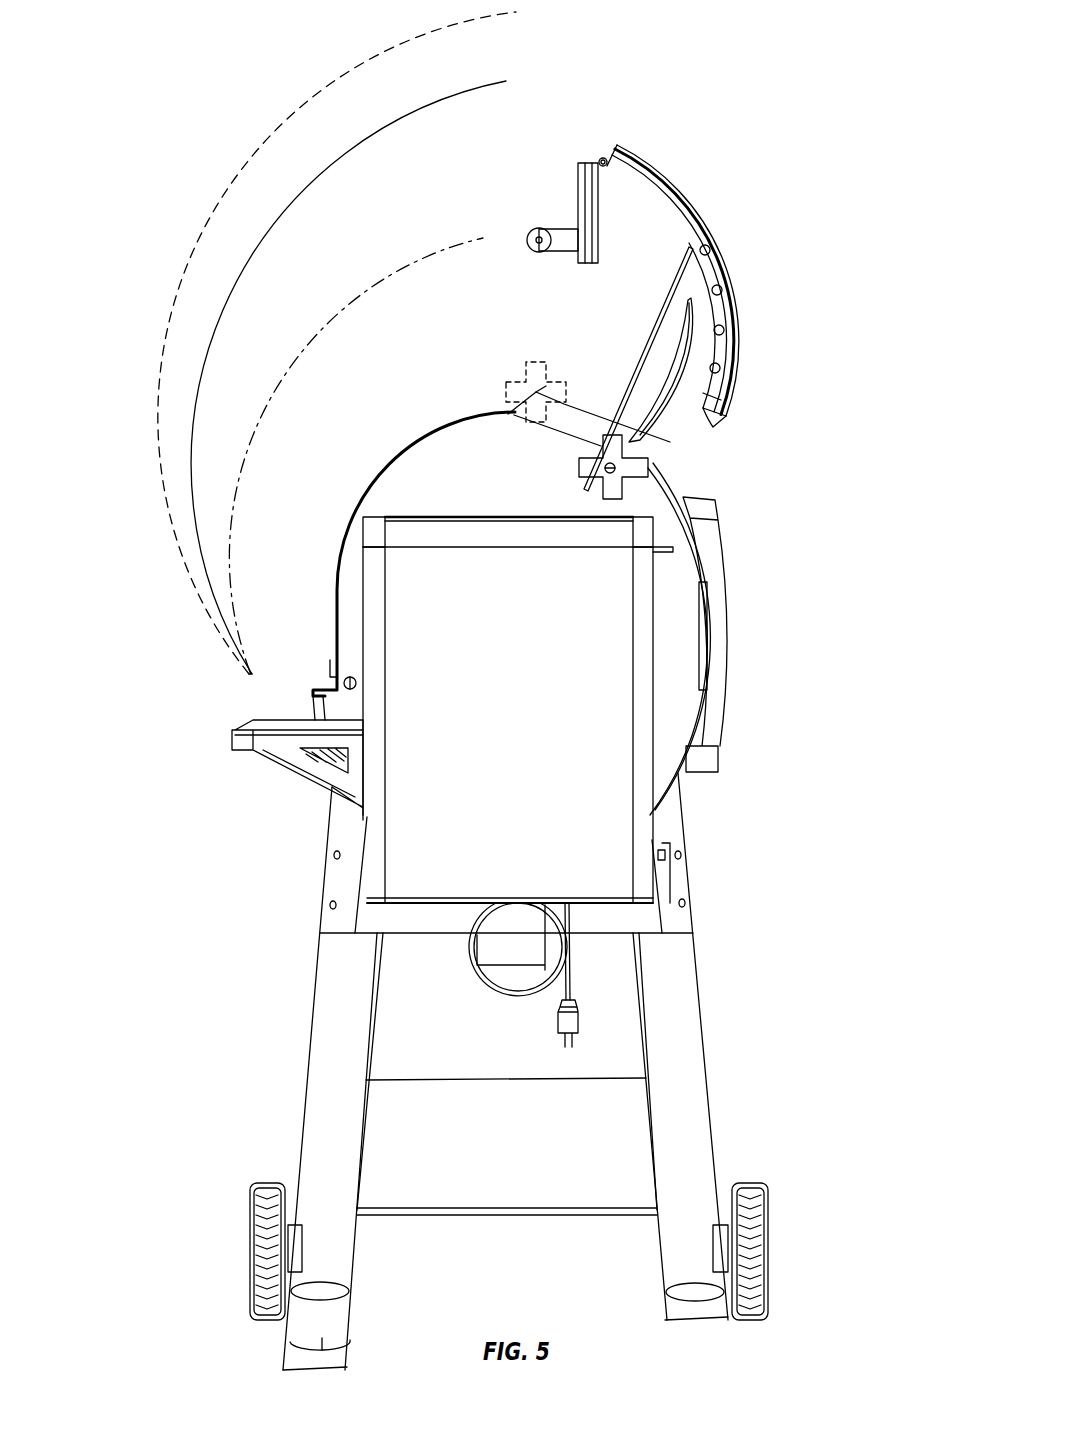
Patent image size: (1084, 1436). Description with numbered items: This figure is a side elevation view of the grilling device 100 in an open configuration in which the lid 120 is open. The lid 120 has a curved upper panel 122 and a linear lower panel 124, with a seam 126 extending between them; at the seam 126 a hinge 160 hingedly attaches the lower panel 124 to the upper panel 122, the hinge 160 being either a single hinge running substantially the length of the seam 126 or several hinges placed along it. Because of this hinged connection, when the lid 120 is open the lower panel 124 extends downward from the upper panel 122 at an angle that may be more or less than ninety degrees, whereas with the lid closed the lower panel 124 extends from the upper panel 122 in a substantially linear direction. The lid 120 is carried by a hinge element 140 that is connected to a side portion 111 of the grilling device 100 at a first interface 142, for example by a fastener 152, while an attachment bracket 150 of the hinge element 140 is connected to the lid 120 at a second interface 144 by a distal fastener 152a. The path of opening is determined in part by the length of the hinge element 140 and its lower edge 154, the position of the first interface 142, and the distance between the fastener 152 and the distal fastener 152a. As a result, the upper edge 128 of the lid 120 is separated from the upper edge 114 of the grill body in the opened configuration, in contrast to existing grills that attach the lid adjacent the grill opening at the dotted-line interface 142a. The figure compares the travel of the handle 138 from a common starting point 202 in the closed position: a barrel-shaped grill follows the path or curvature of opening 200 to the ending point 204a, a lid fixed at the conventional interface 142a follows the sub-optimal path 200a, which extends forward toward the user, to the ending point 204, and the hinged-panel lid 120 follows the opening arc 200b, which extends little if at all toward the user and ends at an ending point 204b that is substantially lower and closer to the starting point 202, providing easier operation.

The grilling device 100 is at (206, 22).
The side portion 111 is at (490, 458).
The upper edge 114 is at (524, 378).
The lid 120 is at (752, 207).
The upper panel 122 is at (676, 184).
The lower panel 124 is at (578, 200).
The seam 126 is at (603, 148).
The upper edge 128 is at (713, 427).
The handle 138 is at (530, 230).
The hinge element 140 is at (755, 358).
The first interface 142 is at (655, 464).
The interface 142a is at (546, 386).
The second interface 144 is at (705, 394).
The attachment bracket 150 is at (723, 312).
The fastener 152 is at (700, 291).
The distal fastener 152a is at (712, 250).
The lower edge 154 is at (646, 346).
The hinge 160 is at (607, 168).
The path or curvature of opening 200 is at (232, 178).
The path or curvature of opening 200a is at (299, 190).
The opening arc 200b is at (320, 330).
The starting point 202 is at (230, 674).
The ending point 204 is at (558, 64).
The ending point 204a is at (580, 9).
The ending point 204b is at (495, 257).